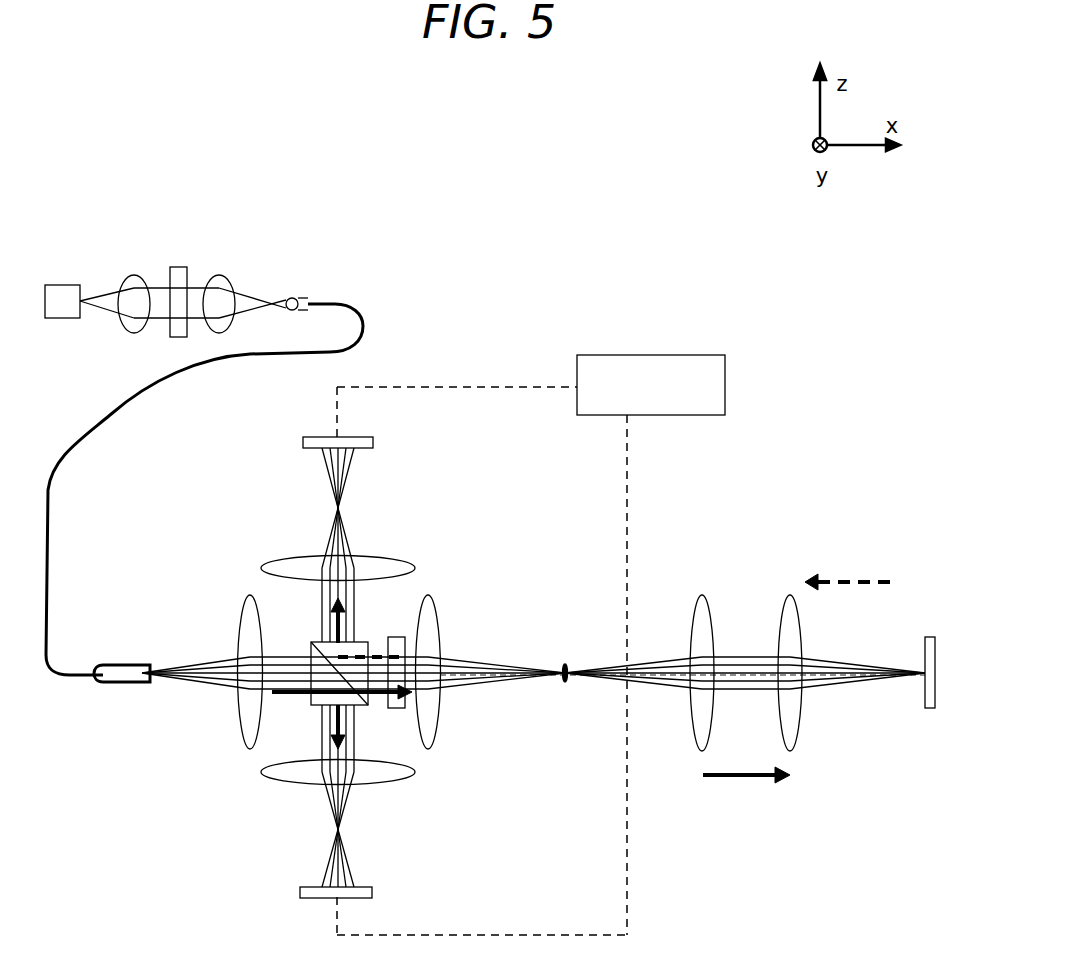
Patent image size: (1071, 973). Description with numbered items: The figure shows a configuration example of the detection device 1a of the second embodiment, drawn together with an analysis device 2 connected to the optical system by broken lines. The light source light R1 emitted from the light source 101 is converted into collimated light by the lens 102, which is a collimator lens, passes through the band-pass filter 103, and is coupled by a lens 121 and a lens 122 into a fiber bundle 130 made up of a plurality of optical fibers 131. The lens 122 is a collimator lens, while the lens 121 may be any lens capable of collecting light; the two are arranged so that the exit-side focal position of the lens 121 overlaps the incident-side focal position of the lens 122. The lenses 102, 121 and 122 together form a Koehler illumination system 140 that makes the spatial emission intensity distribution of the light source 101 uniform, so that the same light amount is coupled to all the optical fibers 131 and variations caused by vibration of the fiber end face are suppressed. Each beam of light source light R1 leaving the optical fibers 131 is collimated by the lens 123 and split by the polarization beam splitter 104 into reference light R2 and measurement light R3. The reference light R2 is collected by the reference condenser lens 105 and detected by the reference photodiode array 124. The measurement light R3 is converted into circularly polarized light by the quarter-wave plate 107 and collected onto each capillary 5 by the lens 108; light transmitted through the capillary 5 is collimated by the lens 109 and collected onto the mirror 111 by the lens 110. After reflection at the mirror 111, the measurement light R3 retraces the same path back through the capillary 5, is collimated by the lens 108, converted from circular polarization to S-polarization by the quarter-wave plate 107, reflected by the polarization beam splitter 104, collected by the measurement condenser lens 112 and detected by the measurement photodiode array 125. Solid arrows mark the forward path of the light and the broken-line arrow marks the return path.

The detection device 1a is at (688, 244).
The analysis device 2 is at (663, 355).
The capillary 5 is at (565, 664).
The light source 101 is at (63, 318).
The lens 102 is at (133, 277).
The band-pass filter 103 is at (177, 267).
The polarization beam splitter 104 is at (363, 706).
The reference condenser lens 105 is at (285, 781).
The λ/4 plate 107 is at (400, 637).
The lens 108 is at (441, 745).
The lens 109 is at (702, 595).
The lens 110 is at (790, 595).
The mirror 111 is at (930, 637).
The measurement condenser lens 112 is at (263, 567).
The lens 121 is at (220, 277).
The lens 122 is at (297, 296).
The lens 123 is at (236, 708).
The reference photodiode array 124 is at (373, 891).
The measurement photodiode array 125 is at (374, 443).
The fiber bundle 130 is at (277, 493).
The optical fiber 131 is at (365, 325).
The Koehler illumination system 140 is at (227, 260).
The light source light R1 is at (252, 295).
The reference light R2 is at (322, 834).
The measurement light R3 is at (323, 463).